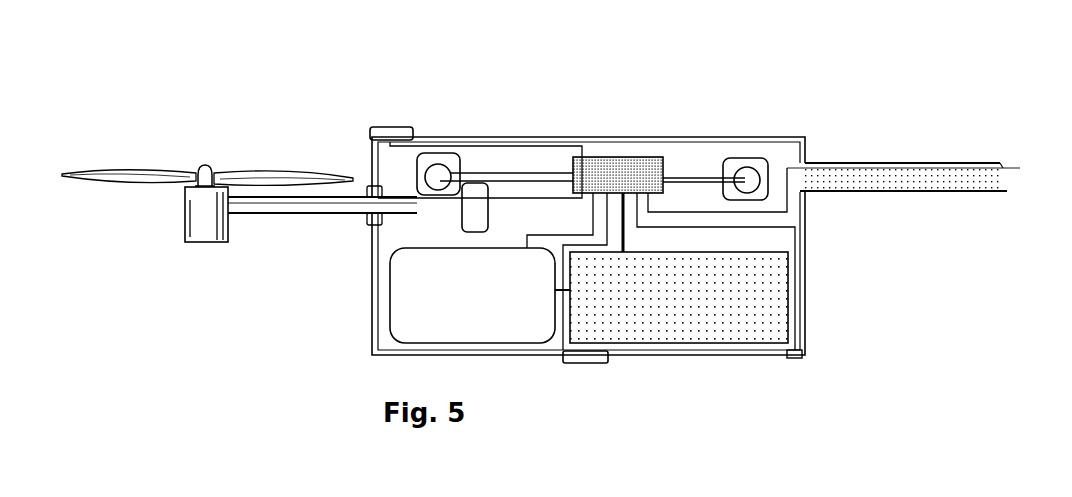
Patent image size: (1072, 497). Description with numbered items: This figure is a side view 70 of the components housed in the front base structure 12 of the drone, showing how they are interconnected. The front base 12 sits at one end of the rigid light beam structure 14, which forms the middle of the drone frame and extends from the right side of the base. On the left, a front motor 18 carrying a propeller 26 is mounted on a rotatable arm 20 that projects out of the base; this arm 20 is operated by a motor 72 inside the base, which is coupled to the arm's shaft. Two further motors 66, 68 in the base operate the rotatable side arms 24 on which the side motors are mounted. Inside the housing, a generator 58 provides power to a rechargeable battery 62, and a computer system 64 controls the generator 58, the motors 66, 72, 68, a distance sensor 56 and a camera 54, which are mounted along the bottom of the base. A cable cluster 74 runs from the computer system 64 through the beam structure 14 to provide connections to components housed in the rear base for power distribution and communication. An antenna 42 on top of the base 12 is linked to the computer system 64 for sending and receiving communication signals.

The front base structure 12 is at (806, 255).
The beam structure 14 is at (882, 163).
The front motor 18 is at (185, 215).
The arm 20 is at (273, 218).
The side arms 24 is at (437, 163).
The propeller 26 is at (120, 168).
The antenna 42 is at (376, 128).
The camera 54 is at (790, 358).
The distance sensor 56 is at (590, 364).
The generator 58 is at (390, 300).
The rechargeable battery 62 is at (698, 345).
The computer system 64 is at (635, 157).
The motor 66 is at (455, 153).
The motor 68 is at (748, 158).
The side view 70 is at (417, 96).
The motor 72 is at (483, 183).
The cable cluster 74 is at (1012, 168).